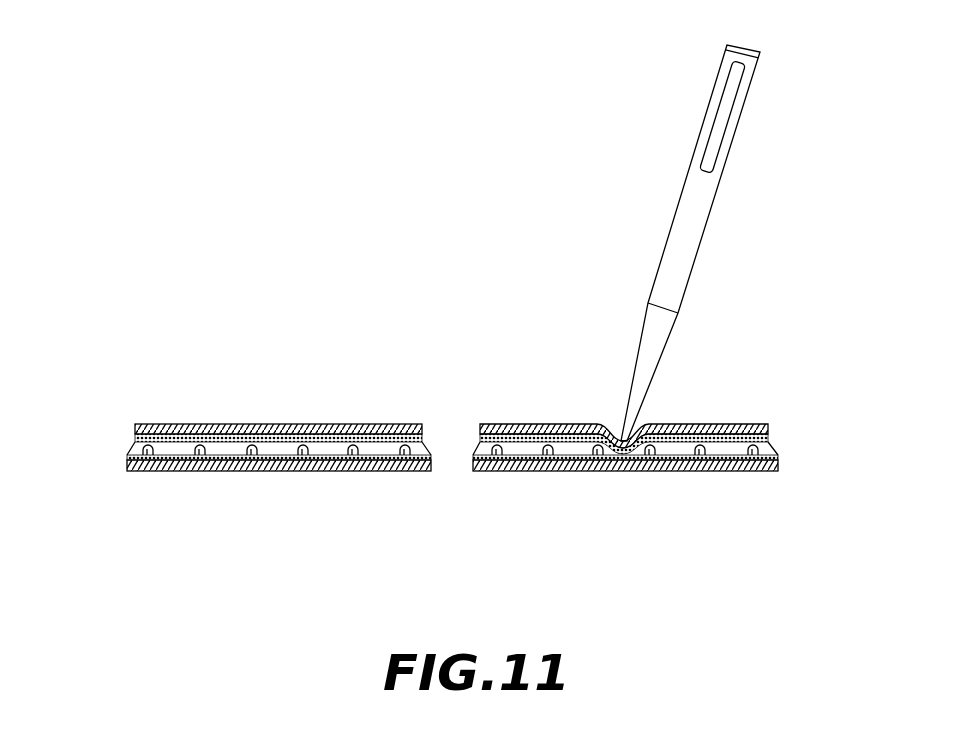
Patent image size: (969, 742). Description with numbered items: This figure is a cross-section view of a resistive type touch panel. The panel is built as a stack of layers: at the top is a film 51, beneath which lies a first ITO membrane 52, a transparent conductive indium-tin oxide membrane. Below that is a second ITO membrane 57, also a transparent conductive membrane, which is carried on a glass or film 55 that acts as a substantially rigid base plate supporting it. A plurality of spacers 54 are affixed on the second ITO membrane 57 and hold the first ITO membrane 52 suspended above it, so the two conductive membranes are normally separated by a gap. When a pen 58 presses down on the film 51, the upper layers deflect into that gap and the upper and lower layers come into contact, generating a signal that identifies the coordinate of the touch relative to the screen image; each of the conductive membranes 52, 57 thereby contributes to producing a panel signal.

The film 51 is at (170, 425).
The first ITO membrane 52 is at (137, 431).
The spacer 54 is at (293, 472).
The glass or film 55 is at (183, 469).
The second ITO membrane 57 is at (133, 463).
The pen 58 is at (692, 190).